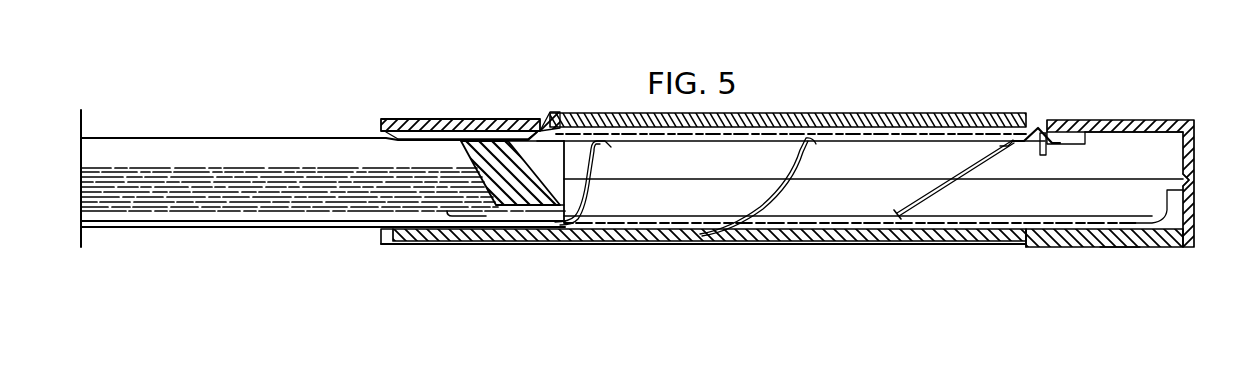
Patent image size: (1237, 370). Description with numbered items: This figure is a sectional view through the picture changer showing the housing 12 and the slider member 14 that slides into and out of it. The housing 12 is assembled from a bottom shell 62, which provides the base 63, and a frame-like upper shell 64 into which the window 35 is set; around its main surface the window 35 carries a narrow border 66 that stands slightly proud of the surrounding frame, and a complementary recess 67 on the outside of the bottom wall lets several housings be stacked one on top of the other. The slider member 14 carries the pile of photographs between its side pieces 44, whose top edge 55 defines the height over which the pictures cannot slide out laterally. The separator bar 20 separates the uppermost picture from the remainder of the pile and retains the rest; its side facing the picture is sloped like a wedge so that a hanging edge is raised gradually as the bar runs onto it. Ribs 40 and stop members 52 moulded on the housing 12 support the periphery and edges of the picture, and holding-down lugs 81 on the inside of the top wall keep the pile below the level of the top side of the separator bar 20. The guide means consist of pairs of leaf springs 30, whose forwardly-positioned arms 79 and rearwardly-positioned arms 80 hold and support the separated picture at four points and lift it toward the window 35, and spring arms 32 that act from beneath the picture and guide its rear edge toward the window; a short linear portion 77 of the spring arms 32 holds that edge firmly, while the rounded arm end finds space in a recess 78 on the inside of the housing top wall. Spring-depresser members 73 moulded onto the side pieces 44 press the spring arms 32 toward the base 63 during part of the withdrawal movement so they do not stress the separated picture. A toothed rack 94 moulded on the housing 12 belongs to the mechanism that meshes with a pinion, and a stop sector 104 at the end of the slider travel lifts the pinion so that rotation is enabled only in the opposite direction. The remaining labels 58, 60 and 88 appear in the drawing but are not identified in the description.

The housing 12 is at (1135, 121).
The slider member 14 is at (270, 228).
The separator bar 20 is at (466, 141).
The leaf springs 30 is at (597, 239).
The spring arms 32 is at (923, 200).
The window 35 is at (860, 121).
The ribs 40 is at (1081, 144).
The side pieces 44 is at (252, 148).
The stop members 52 is at (1044, 160).
The top edge 55 is at (171, 136).
The upper housing bar 58 is at (410, 119).
The lower housing end 60 is at (450, 243).
The bottom shell 62 is at (1122, 247).
The base 63 is at (853, 246).
The upper shell 64 is at (1080, 122).
The border 66 is at (548, 118).
The recess 67 is at (643, 242).
The spring-depresser members 73 is at (486, 217).
The linear portion 77 is at (1032, 142).
The recess 78 is at (1047, 127).
The forwardly-positioned arms 79 is at (604, 158).
The rearwardly-positioned arms 80 is at (797, 158).
The holding-down lugs 81 is at (503, 138).
The notch 88 is at (1196, 153).
The toothed rack 94 is at (1047, 247).
The stop sector 104 is at (1159, 210).